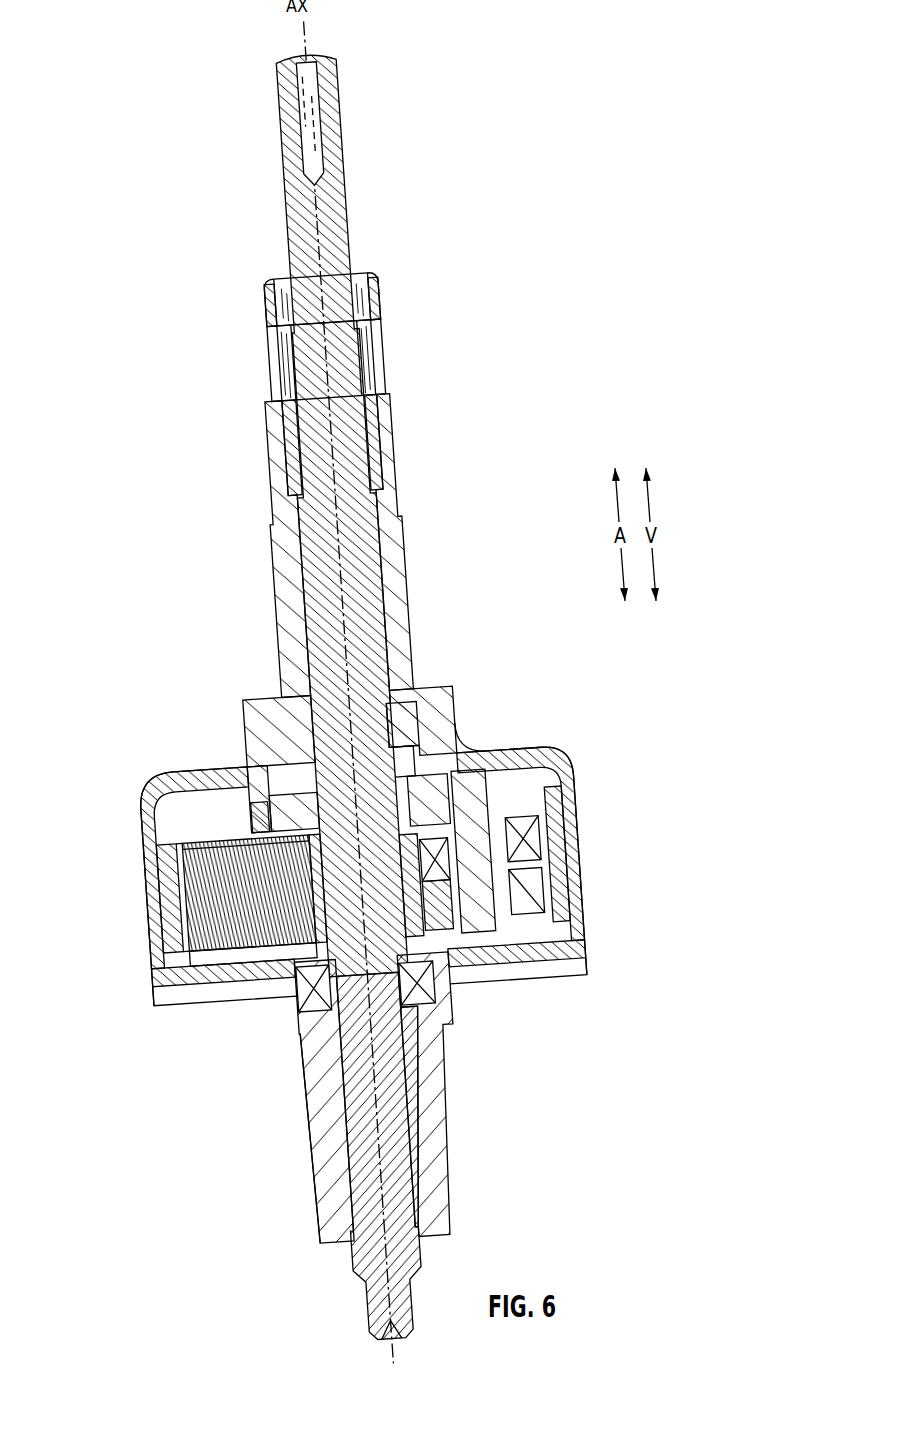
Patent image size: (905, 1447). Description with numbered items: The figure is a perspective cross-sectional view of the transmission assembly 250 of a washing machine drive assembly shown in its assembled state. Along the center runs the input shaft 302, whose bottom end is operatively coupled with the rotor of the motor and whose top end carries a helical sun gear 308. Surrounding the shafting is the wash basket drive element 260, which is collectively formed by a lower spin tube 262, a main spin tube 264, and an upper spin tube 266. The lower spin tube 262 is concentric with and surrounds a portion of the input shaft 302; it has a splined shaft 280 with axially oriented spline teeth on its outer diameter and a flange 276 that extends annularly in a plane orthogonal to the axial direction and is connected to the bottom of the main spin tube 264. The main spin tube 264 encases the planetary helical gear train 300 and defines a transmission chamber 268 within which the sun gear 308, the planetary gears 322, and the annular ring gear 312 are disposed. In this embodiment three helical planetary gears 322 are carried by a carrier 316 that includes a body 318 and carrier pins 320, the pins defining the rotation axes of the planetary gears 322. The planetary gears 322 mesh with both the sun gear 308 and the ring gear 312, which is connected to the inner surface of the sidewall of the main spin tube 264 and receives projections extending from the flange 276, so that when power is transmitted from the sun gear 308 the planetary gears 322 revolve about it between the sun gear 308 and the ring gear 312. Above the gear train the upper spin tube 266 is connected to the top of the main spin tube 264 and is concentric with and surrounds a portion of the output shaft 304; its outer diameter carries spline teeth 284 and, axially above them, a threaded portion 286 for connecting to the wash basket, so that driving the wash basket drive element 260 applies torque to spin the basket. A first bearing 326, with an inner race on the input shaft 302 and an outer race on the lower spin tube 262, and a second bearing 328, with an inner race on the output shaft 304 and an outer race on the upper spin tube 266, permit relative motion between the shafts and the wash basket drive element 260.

The transmission assembly 250 is at (513, 223).
The wash basket drive element 260 is at (278, 597).
The lower spin tube 262 is at (445, 1130).
The main spin tube 264 is at (440, 742).
The upper spin tube 266 is at (413, 545).
The transmission chamber 268 is at (210, 820).
The flange 276 is at (240, 985).
The splined shaft 280 is at (300, 1068).
The spline teeth 284 is at (265, 370).
The threaded portion 286 is at (268, 318).
The planetary helical gear train 300 is at (97, 877).
The input shaft 302 is at (373, 1127).
The output shaft 304 is at (333, 392).
The sun gear 308 is at (318, 912).
The ring gear 312 is at (170, 925).
The carrier 316 is at (284, 805).
The body 318 is at (258, 825).
The carrier pins 320 is at (480, 800).
The planetary gears 322 is at (243, 877).
The first bearing 326 is at (428, 985).
The second bearing 328 is at (410, 735).